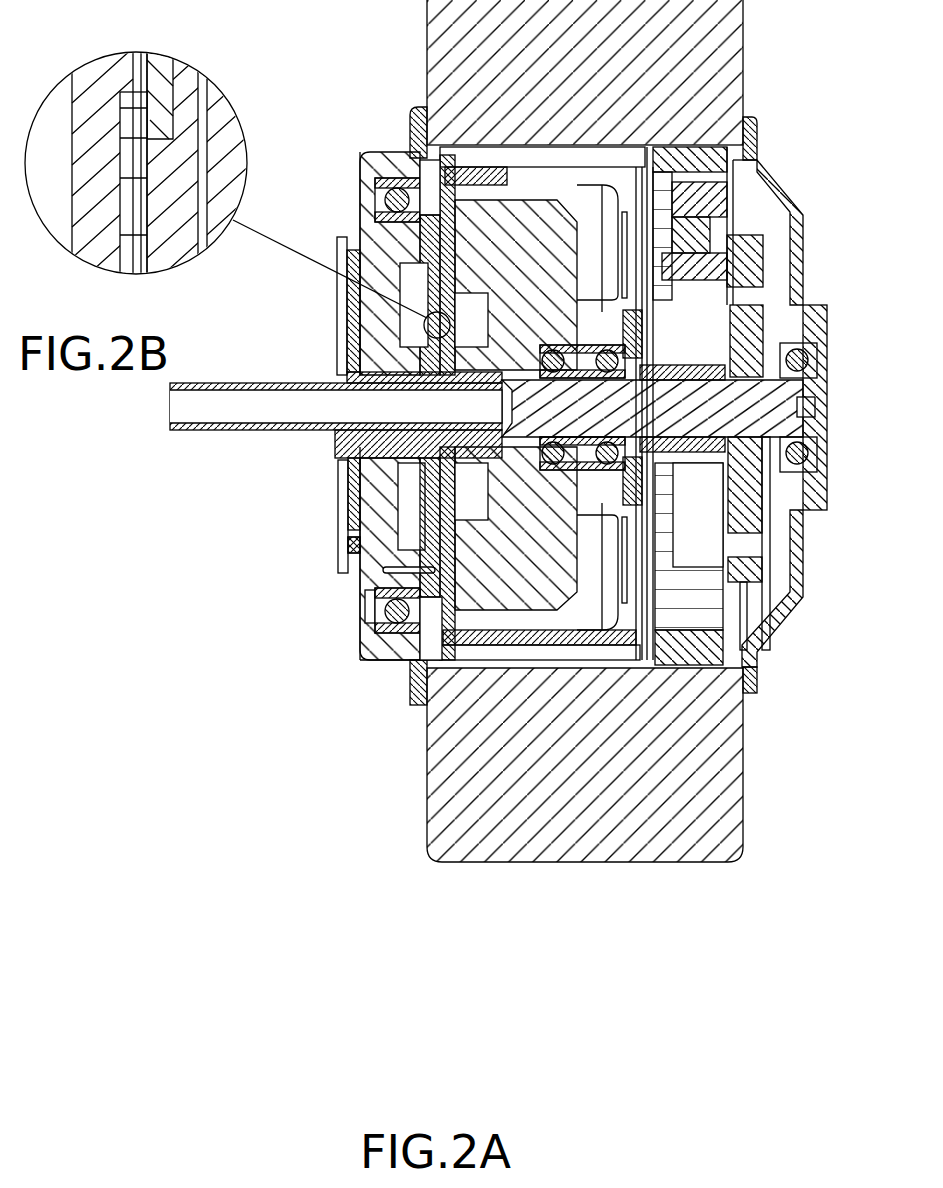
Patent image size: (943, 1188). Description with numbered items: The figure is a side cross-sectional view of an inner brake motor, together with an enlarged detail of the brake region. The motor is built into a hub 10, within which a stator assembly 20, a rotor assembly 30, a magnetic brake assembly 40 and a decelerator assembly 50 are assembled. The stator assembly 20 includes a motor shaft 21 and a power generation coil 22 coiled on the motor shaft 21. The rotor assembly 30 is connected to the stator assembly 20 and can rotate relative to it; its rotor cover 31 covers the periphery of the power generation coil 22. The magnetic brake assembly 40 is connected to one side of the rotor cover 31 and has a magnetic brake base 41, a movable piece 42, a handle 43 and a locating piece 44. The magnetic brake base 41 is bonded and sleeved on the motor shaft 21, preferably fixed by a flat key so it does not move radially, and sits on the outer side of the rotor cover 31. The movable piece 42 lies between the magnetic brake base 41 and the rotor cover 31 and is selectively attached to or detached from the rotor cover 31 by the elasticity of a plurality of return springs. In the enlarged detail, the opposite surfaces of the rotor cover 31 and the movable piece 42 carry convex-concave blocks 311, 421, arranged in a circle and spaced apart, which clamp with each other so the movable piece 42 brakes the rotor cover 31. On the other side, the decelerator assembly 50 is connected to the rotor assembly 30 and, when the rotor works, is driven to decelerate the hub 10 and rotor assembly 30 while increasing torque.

In FIG. 2A, the hub 10 is at (758, 47).
In FIG. 2A, the stator assembly 20 is at (487, 618).
In FIG. 2A, the motor shaft 21 is at (333, 434).
In FIG. 2A, the power generation coil 22 is at (529, 598).
In FIG. 2A, the rotor assembly 30 is at (573, 158).
In FIG. 2A, the rotor cover 31 is at (488, 166).
In FIG. 2B, the rotor cover 31 is at (180, 72).
In FIG. 2B, the convex-concave block 311 is at (140, 265).
In FIG. 2A, the magnetic brake assembly 40 is at (388, 122).
In FIG. 2A, the magnetic brake base 41 is at (378, 240).
In FIG. 2B, the movable piece 42 is at (103, 72).
In FIG. 2B, the convex-concave block 421 is at (128, 265).
In FIG. 2A, the handle 43 is at (345, 492).
In FIG. 2A, the locating piece 44 is at (345, 545).
In FIG. 2A, the decelerator assembly 50 is at (740, 205).